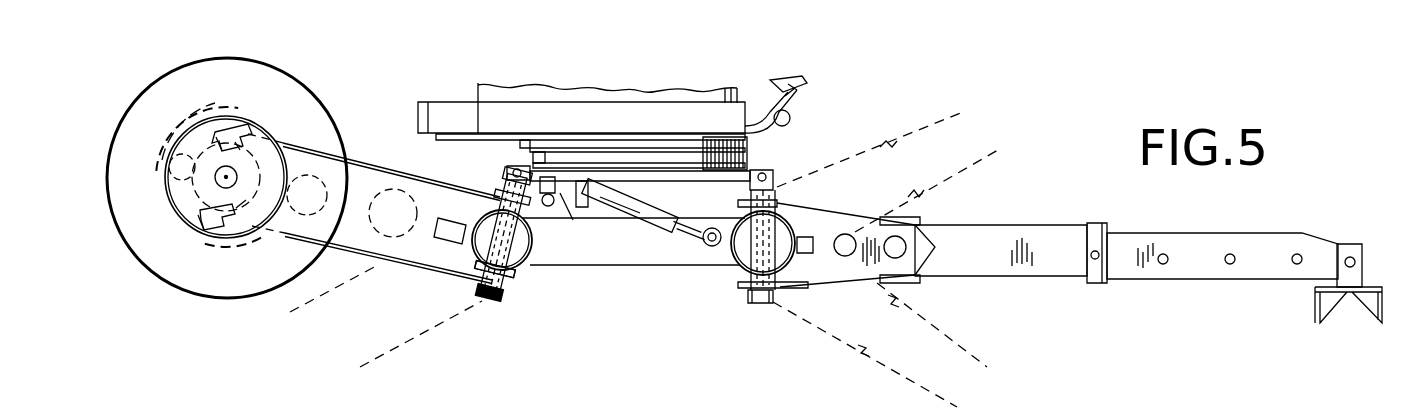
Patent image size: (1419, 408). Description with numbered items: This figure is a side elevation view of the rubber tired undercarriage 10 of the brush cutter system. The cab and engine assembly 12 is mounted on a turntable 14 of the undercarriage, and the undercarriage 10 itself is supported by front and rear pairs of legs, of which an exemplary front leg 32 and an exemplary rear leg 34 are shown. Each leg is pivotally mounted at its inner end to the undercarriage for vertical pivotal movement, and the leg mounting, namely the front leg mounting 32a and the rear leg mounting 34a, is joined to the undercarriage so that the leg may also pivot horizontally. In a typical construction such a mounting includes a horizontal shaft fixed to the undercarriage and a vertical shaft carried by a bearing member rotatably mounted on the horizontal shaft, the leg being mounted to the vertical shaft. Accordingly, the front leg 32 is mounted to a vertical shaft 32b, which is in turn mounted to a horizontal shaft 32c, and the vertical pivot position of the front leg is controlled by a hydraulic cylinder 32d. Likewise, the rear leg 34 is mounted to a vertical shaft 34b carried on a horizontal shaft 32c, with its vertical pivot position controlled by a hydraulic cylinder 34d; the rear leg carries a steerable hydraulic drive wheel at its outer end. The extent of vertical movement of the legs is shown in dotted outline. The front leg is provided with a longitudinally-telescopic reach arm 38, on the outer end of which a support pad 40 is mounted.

The undercarriage 10 is at (650, 311).
The cab and engine assembly 12 is at (582, 98).
The turntable 14 is at (433, 110).
The front leg 32 is at (989, 278).
The front leg mounting 32a is at (760, 303).
The vertical shaft 32b is at (792, 267).
The horizontal shaft 32c is at (482, 292).
The hydraulic cylinder 32d is at (745, 154).
The rear leg 34 is at (377, 257).
The rear leg mounting 34a is at (485, 295).
The vertical shaft 34b is at (510, 240).
The hydraulic cylinder 34d is at (652, 230).
The longitudinally-telescopic reach arm 38 is at (1205, 280).
The support pad 40 is at (1327, 310).